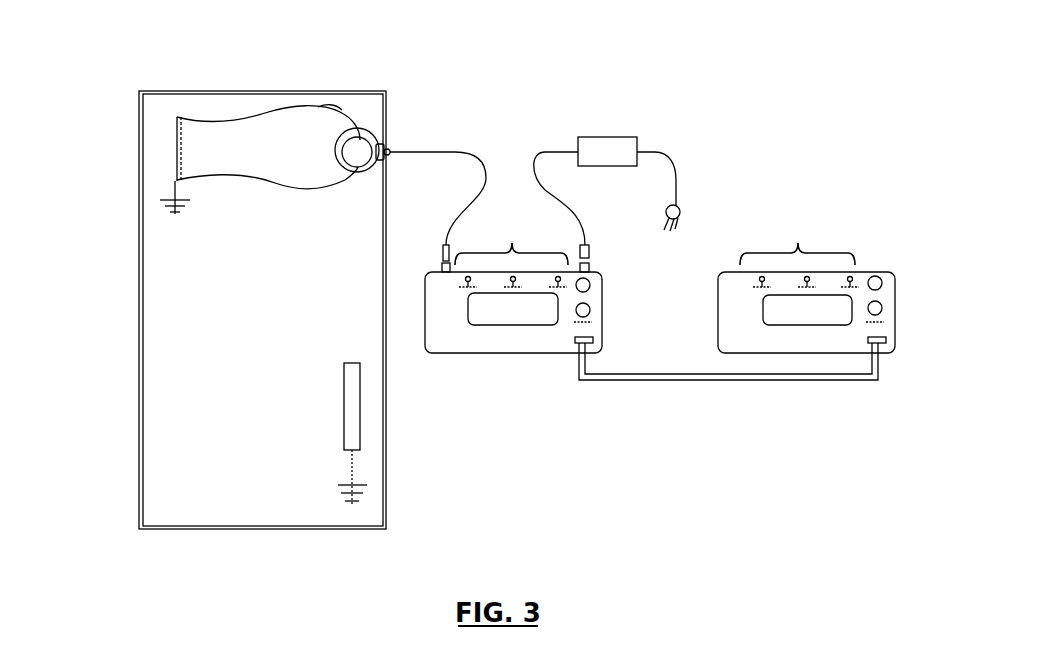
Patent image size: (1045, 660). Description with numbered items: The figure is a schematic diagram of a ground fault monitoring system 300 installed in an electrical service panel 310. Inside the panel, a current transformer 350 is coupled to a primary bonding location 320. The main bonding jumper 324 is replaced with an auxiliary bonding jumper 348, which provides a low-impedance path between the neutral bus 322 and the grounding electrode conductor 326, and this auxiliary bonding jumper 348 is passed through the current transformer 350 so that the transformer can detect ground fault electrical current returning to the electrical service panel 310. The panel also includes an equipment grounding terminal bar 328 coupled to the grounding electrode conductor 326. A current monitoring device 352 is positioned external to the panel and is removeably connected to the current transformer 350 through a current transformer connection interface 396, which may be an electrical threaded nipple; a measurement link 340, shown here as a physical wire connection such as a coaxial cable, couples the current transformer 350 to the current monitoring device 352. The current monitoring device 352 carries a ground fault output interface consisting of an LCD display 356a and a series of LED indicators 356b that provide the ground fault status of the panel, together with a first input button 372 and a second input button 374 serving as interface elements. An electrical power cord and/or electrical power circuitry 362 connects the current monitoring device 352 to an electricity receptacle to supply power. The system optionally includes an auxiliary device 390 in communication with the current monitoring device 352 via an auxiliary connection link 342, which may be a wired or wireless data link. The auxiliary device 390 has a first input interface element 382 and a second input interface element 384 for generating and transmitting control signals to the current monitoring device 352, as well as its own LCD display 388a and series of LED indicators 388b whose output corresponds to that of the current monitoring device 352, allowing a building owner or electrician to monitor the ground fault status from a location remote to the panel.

The ground fault monitoring system 300 is at (674, 31).
The electrical service panel 310 is at (182, 92).
The neutral bus 322 is at (153, 123).
The primary bonding location 320 is at (175, 118).
The main bonding jumper 324 is at (175, 165).
The grounding electrode conductor 326 is at (175, 197).
The equipment grounding terminal bar 328 is at (352, 405).
The auxiliary bonding jumper 348 is at (318, 107).
The current transformer 350 is at (358, 135).
The current transformer connection interface 396 is at (388, 150).
The measurement link 340 is at (415, 152).
The electrical power cord 362 is at (630, 143).
The current monitoring device 352 is at (590, 270).
The LCD display 356a is at (502, 315).
The series of LED indicators 356b is at (511, 256).
The first input button 372 is at (590, 285).
The second input button 374 is at (590, 310).
The auxiliary connection link 342 is at (628, 375).
The LCD display 388a is at (838, 305).
The series of LED indicators 388b is at (799, 253).
The auxiliary device 390 is at (878, 271).
The first input interface element 382 is at (882, 283).
The second input interface element 384 is at (882, 308).